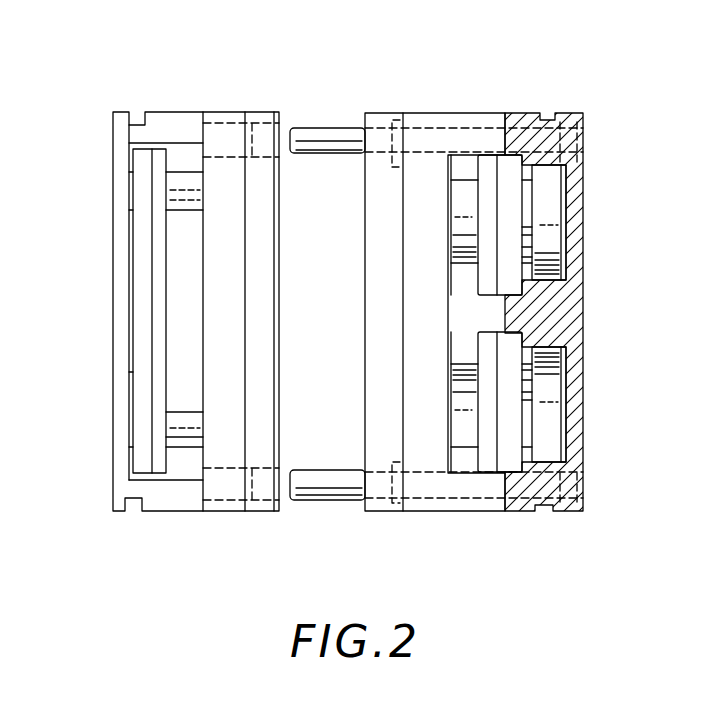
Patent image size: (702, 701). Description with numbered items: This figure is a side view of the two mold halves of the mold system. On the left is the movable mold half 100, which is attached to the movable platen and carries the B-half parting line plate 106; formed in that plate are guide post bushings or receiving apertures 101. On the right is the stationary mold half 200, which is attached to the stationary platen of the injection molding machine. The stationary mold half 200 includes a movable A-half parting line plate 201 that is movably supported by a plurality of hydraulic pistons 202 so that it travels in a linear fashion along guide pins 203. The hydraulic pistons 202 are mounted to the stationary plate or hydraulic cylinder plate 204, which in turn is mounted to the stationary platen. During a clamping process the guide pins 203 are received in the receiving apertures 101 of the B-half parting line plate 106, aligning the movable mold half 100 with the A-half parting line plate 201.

The movable mold half 100 is at (193, 85).
The guide post bushings or receiving apertures 101 is at (268, 138).
The B-half parting line plate 106 is at (273, 512).
The stationary mold half 200 is at (549, 85).
The A-half parting line plate 201 is at (380, 505).
The hydraulic pistons 202 is at (472, 198).
The guide pins 203 is at (327, 130).
The stationary plate or hydraulic cylinder plate 204 is at (566, 318).